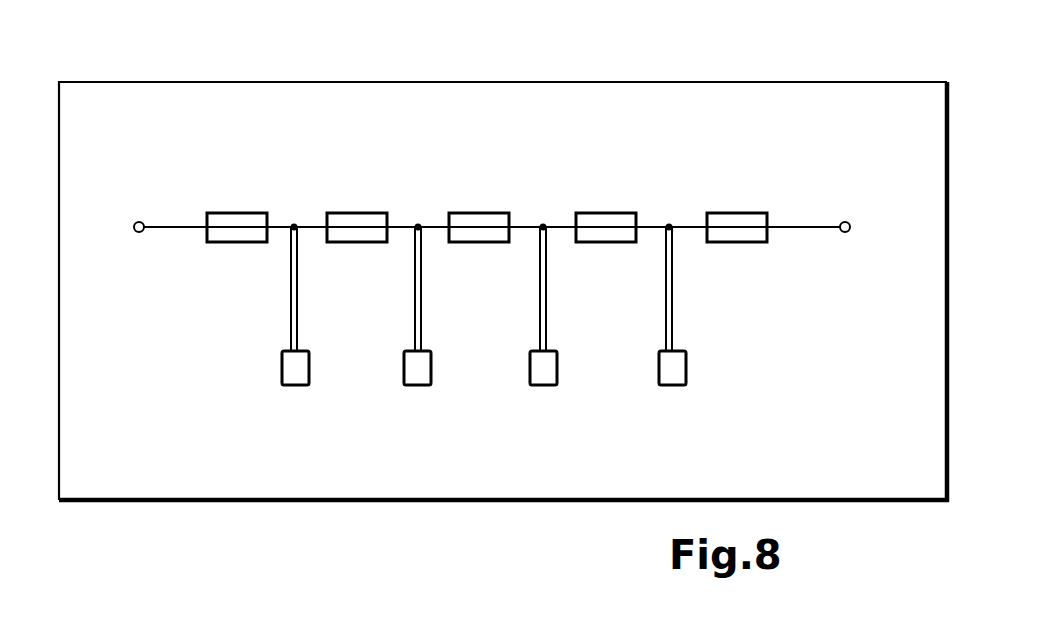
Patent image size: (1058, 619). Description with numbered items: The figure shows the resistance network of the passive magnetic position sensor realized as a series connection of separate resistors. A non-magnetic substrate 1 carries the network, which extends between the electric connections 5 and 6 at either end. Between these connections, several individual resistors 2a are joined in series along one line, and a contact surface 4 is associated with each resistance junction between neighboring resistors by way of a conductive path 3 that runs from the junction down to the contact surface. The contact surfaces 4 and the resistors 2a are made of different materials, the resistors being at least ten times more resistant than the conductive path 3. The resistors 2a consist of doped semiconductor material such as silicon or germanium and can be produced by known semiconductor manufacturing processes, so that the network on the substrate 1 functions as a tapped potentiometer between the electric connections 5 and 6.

The non-magnetic substrate 1 is at (170, 485).
The separate resistor 2a is at (725, 219).
The conductive path 3 is at (543, 310).
The contact surface 4 is at (417, 376).
The electric connection 5 is at (139, 222).
The electric connection 6 is at (845, 222).